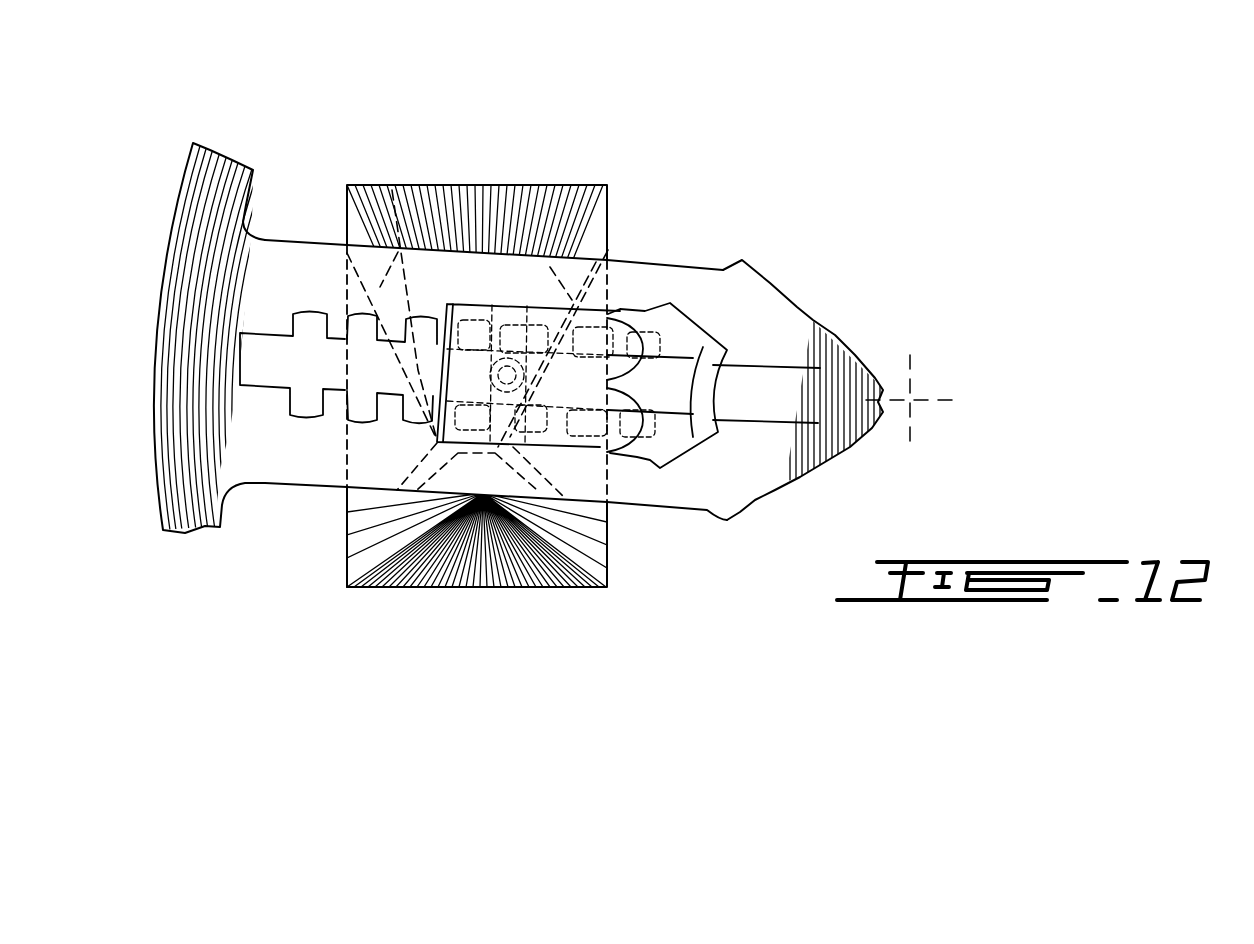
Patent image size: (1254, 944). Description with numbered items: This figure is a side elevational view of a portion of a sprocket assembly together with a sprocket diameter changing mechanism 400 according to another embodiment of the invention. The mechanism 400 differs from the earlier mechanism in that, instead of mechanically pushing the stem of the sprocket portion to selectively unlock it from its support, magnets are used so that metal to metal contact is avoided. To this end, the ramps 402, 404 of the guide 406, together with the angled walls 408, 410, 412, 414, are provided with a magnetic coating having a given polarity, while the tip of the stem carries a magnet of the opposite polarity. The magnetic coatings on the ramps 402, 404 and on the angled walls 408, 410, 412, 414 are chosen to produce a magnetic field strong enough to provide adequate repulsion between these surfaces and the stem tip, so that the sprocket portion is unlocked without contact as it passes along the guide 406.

The diameter changing mechanism 400 is at (560, 612).
The ramp 402 is at (467, 205).
The ramp 404 is at (495, 587).
The guide 406 is at (395, 593).
The angled wall 408 is at (392, 190).
The angled wall 410 is at (605, 185).
The angled wall 412 is at (347, 585).
The angled wall 414 is at (573, 590).